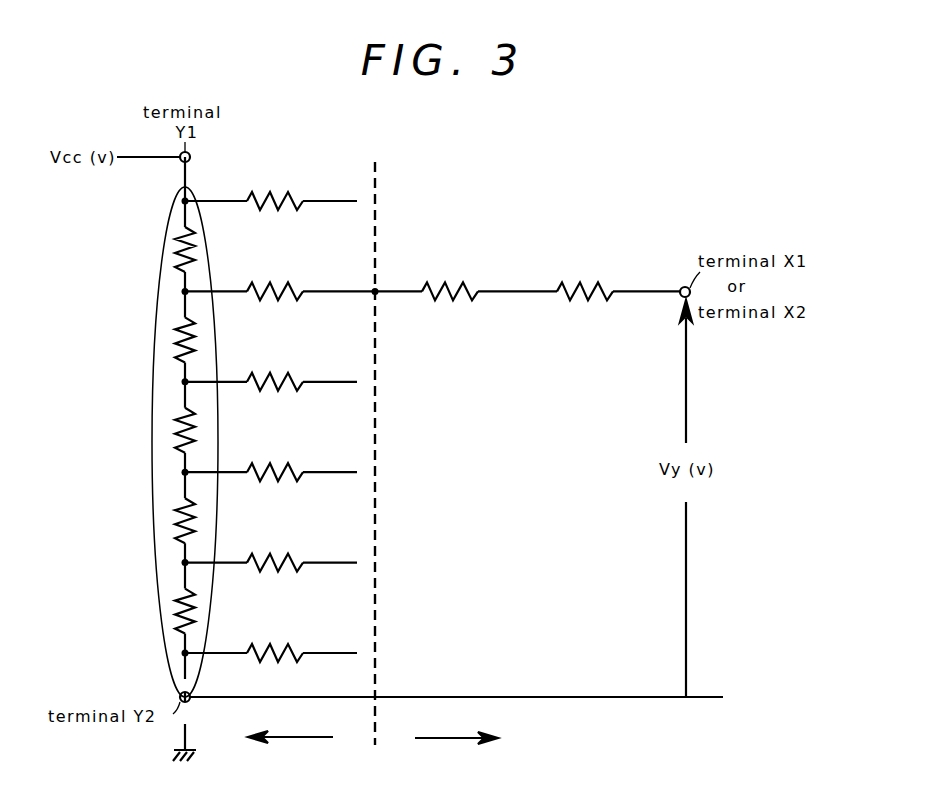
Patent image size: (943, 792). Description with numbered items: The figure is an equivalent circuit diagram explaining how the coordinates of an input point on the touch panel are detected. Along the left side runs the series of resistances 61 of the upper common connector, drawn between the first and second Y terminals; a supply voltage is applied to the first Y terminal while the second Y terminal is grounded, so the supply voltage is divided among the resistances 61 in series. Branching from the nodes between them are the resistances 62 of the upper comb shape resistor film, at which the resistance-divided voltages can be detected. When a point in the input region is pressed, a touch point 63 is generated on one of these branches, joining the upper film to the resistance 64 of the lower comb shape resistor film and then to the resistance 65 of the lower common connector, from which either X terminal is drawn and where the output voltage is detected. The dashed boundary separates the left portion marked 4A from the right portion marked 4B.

The series of resistances of the upper common connector 61 is at (157, 262).
The resistances of the upper comb shape resistor film 62 is at (282, 191).
The touch point 63 is at (379, 296).
The resistance of the lower comb shape resistor film 64 is at (451, 282).
The resistance of the lower common connector 65 is at (606, 282).
The region shown in FIG. 4A is at (297, 714).
The region shown in FIG. 4B is at (448, 714).